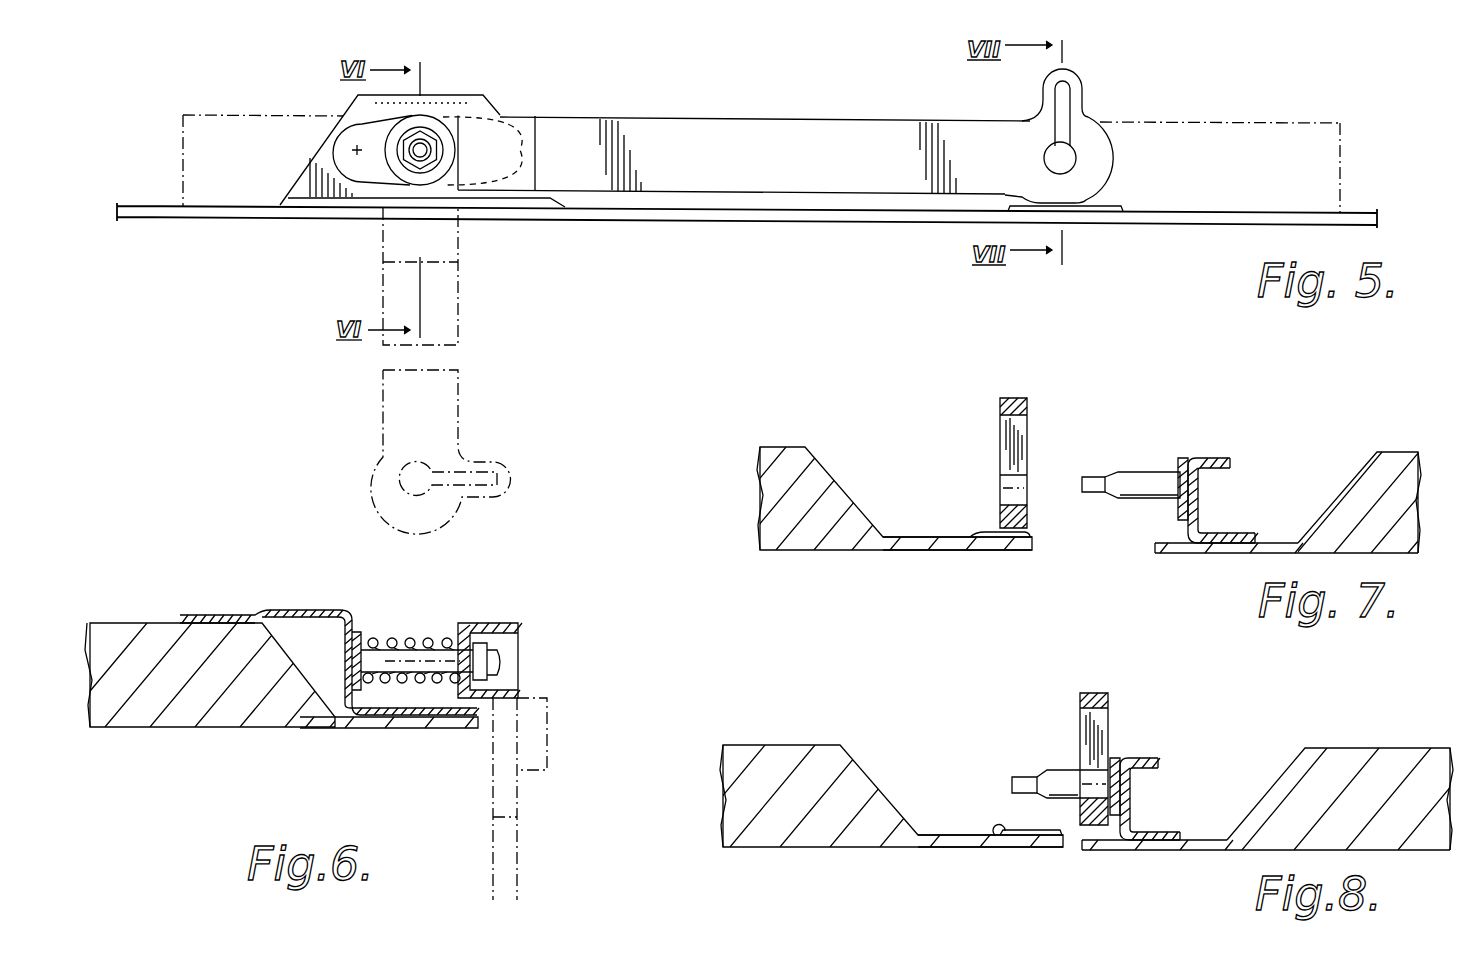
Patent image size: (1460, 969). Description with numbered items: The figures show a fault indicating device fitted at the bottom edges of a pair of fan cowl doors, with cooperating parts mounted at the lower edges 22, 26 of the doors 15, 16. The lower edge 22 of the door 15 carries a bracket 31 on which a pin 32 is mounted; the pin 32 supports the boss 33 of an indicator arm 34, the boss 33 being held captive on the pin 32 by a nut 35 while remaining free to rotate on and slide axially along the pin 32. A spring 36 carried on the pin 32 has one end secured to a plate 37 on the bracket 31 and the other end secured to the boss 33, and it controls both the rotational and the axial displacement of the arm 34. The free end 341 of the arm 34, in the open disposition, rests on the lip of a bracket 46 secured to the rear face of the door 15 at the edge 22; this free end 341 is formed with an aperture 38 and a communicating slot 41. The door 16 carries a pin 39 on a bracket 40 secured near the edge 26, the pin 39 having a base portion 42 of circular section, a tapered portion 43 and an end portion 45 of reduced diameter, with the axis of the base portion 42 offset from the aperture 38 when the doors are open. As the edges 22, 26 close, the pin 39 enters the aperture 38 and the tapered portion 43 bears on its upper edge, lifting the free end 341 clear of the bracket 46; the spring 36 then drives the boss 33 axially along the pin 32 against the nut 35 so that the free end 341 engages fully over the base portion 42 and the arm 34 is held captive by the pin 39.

In FIG. 5, the fan cowl door 15 is at (914, 230).
In FIG. 6, the fan cowl door 15 is at (317, 742).
In FIG. 7, the fan cowl door 15 is at (777, 458).
In FIG. 8, the fan cowl door 15 is at (793, 763).
In FIG. 7, the fan cowl door 16 is at (1395, 470).
In FIG. 8, the fan cowl door 16 is at (1340, 768).
In FIG. 5, the lower edge 22 is at (1172, 215).
In FIG. 6, the lower edge 22 is at (485, 730).
In FIG. 7, the lower edge 22 is at (1027, 553).
In FIG. 8, the lower edge 22 is at (1063, 848).
In FIG. 7, the lower edge 26 is at (1148, 547).
In FIG. 8, the lower edge 26 is at (1082, 846).
In FIG. 5, the bracket 31 is at (352, 98).
In FIG. 6, the bracket 31 is at (283, 610).
In FIG. 6, the pin 32 is at (418, 653).
In FIG. 6, the boss 33 is at (512, 628).
In FIG. 5, the indicator arm 34 is at (730, 140).
In FIG. 6, the indicator arm 34 is at (503, 795).
In FIG. 5, the free end 341 is at (1083, 125).
In FIG. 6, the nut 35 is at (518, 645).
In FIG. 6, the spring 36 is at (377, 640).
In FIG. 6, the plate 37 is at (354, 630).
In FIG. 5, the aperture 38 is at (1080, 163).
In FIG. 7, the aperture 38 is at (1025, 497).
In FIG. 8, the aperture 38 is at (1125, 813).
In FIG. 7, the pin 39 is at (1159, 452).
In FIG. 8, the pin 39 is at (1032, 767).
In FIG. 7, the bracket 40 is at (1223, 458).
In FIG. 8, the bracket 40 is at (1143, 760).
In FIG. 5, the slot 41 is at (1042, 125).
In FIG. 7, the slot 41 is at (1007, 435).
In FIG. 8, the slot 41 is at (1078, 732).
In FIG. 7, the base portion 42 is at (1173, 477).
In FIG. 8, the base portion 42 is at (1100, 779).
In FIG. 7, the tapered portion 43 is at (1130, 472).
In FIG. 8, the tapered portion 43 is at (1060, 775).
In FIG. 7, the end portion 45 is at (1087, 475).
In FIG. 8, the end portion 45 is at (1012, 784).
In FIG. 5, the bracket 46 is at (1110, 205).
In FIG. 7, the bracket 46 is at (973, 533).
In FIG. 8, the bracket 46 is at (993, 841).